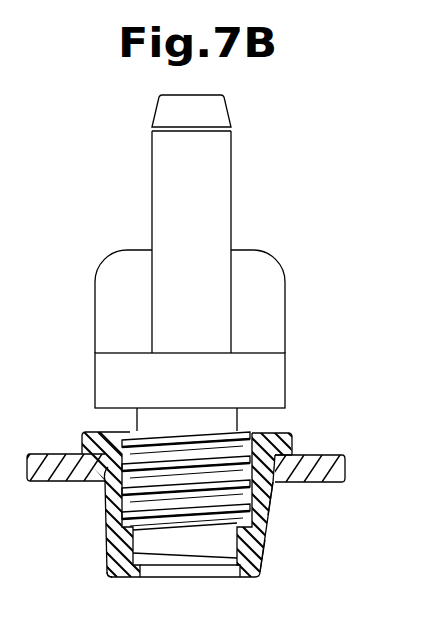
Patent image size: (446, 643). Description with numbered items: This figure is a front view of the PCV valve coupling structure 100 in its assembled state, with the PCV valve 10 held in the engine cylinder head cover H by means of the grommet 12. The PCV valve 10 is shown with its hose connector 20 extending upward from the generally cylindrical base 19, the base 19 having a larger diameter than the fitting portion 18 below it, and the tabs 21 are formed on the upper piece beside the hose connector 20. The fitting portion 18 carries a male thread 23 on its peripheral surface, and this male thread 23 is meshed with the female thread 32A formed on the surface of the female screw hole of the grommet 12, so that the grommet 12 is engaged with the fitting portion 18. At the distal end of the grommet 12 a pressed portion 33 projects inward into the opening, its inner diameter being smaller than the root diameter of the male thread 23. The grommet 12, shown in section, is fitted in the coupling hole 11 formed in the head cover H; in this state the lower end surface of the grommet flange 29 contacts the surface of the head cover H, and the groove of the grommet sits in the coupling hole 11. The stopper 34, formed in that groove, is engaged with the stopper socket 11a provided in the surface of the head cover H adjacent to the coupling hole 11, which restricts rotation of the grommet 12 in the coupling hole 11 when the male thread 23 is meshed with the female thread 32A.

The PCV valve coupling structure 100 is at (283, 161).
The PCV valve 10 is at (270, 240).
The hose connector 20 is at (152, 155).
The tabs 21 is at (95, 308).
The base 19 is at (95, 378).
The coupling hole 11 is at (103, 487).
The stopper socket 11a is at (278, 446).
The grommet flange 29 is at (285, 446).
The stopper 34 is at (270, 488).
The male thread 23 is at (268, 520).
The female thread 32A is at (263, 543).
The pressed portion 33 is at (237, 572).
The fitting portion 18 is at (185, 537).
The grommet 12 is at (110, 573).
The cylinder head cover H is at (50, 454).